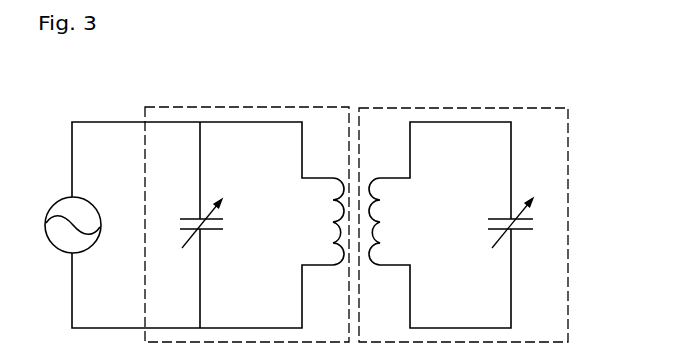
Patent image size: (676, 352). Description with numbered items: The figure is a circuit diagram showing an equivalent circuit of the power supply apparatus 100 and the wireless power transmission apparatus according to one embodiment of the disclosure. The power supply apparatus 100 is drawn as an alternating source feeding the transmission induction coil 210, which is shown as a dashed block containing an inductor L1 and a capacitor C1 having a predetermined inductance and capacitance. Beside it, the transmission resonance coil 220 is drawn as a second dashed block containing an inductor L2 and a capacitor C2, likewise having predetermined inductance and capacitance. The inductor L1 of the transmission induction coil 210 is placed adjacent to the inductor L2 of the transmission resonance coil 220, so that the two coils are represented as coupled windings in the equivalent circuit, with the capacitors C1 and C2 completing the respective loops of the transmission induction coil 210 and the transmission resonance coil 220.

The power supply apparatus 100 is at (55, 202).
The transmission induction coil 210 is at (272, 104).
The transmission resonance coil 220 is at (413, 105).
The capacitor C1 is at (188, 223).
The capacitor C2 is at (524, 223).
The inductor L1 is at (324, 221).
The inductor L2 is at (388, 221).